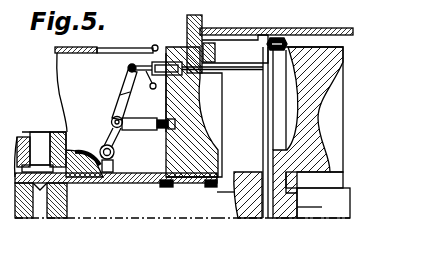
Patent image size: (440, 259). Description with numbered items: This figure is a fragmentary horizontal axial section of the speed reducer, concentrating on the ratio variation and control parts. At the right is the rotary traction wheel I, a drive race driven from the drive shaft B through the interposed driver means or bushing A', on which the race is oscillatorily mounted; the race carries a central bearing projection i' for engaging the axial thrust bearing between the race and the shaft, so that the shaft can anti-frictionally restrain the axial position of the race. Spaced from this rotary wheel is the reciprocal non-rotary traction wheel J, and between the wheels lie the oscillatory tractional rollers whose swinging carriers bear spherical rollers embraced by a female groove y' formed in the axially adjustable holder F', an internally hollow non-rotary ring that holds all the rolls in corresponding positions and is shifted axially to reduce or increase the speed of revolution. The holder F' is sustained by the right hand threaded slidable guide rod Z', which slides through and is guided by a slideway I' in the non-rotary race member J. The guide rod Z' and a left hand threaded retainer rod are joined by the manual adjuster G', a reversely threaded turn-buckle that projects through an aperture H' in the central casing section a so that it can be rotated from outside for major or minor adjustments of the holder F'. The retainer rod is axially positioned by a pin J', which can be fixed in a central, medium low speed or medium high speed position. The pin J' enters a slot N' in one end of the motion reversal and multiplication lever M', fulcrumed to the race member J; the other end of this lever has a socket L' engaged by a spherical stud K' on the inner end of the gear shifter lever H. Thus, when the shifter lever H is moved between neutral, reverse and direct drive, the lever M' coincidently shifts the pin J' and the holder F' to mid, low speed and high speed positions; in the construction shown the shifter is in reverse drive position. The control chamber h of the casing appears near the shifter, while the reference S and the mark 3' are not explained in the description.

The central section a is at (57, 68).
The aperture H' is at (127, 40).
The slideway I' is at (198, 112).
The reciprocal non-rotary traction wheel J is at (235, 49).
The manual adjuster G' is at (164, 86).
The slidable guide rod Z' is at (222, 80).
The pin J' is at (126, 66).
The lever 3' is at (145, 82).
The slot N' is at (114, 95).
The motion reversal and multiplication lever M' is at (108, 100).
The socket L' is at (126, 130).
The spherical stud K' is at (126, 153).
The gear shifter lever H is at (123, 170).
The shaft axis S is at (142, 207).
The female groove y' is at (260, 132).
The holder F' is at (285, 42).
The rotary traction wheel I is at (314, 132).
The bushing A' is at (325, 170).
The drive shaft B is at (351, 193).
The control chamber h is at (297, 208).
The central bearing projection i' is at (317, 211).